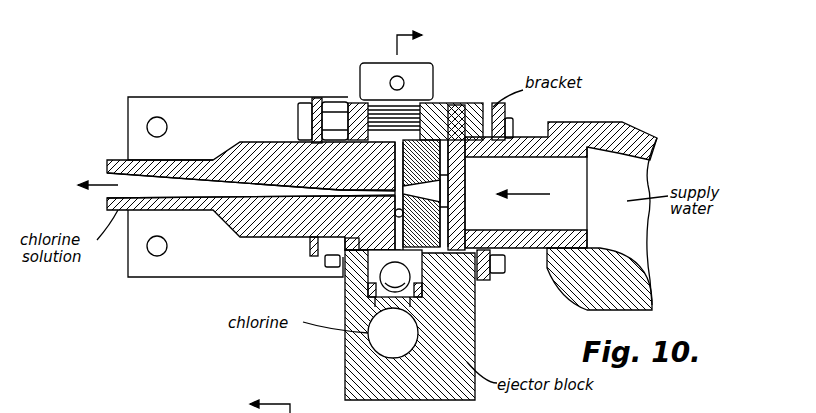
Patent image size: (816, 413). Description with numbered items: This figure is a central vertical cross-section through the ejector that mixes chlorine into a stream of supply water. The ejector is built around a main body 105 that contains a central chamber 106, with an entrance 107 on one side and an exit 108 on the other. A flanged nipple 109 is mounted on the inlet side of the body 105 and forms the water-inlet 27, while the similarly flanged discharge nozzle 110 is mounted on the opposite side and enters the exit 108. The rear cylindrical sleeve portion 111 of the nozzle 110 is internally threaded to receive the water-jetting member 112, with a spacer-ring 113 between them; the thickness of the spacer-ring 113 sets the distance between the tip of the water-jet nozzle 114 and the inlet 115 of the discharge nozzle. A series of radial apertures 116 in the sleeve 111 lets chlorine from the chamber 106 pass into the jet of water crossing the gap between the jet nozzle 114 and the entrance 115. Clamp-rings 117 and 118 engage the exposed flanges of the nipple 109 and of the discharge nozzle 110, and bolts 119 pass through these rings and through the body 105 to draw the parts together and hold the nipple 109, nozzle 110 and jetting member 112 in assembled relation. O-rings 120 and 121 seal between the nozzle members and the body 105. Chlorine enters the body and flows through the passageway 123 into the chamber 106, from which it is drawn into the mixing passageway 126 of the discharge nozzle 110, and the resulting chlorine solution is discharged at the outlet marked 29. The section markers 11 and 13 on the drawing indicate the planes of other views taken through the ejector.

The chlorine solution outlet 29 is at (107, 175).
The mixing passageway 126 is at (223, 186).
The discharge nozzle 110 is at (277, 148).
The bolts 119 is at (305, 103).
The clamp-ring 118 is at (318, 100).
The radial apertures 116 is at (402, 150).
The rear cylindrical sleeve portion 111 is at (427, 130).
The spacer-ring 113 is at (447, 127).
The flanged nipple 109 is at (522, 137).
The water-jetting member 112 is at (462, 168).
The entrance 107 is at (462, 184).
The water-inlet 27 is at (535, 199).
The water-jet nozzle 114 is at (462, 202).
The O-ring 120 is at (462, 218).
The inlet of the outlet nozzle 115 is at (370, 204).
The clamp-ring 117 is at (492, 277).
The central chamber 106 is at (478, 292).
The main body 105 is at (478, 317).
The O-ring 121 is at (345, 262).
The exit 108 is at (352, 263).
The passageway 123 is at (393, 333).
The section line 11 is at (424, 43).
The section line 13 is at (259, 404).